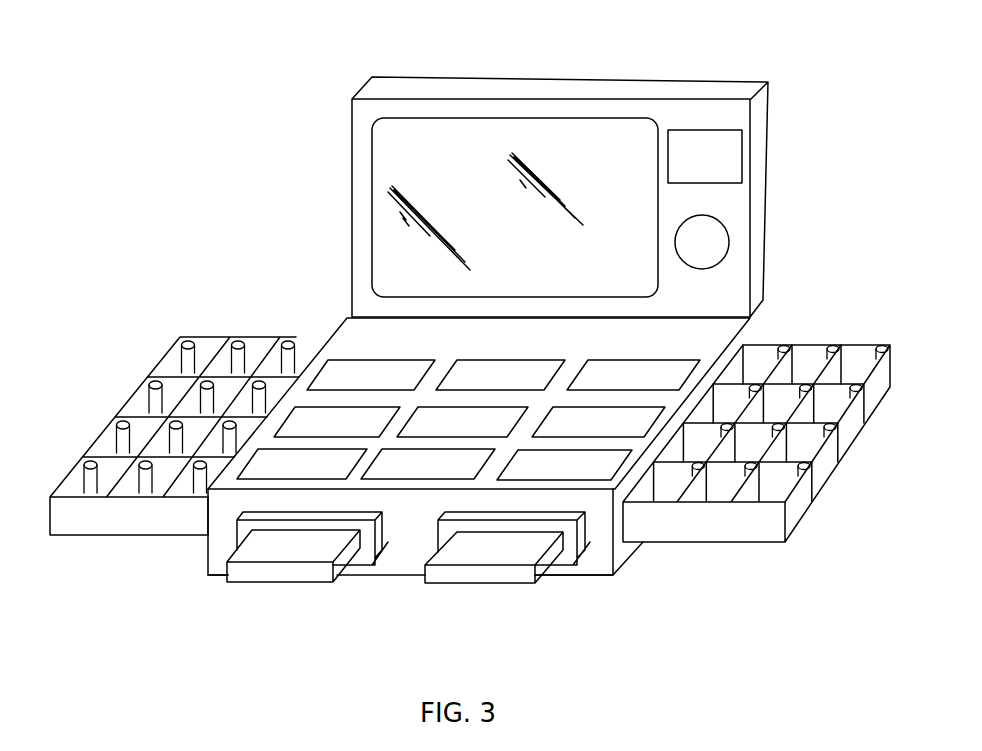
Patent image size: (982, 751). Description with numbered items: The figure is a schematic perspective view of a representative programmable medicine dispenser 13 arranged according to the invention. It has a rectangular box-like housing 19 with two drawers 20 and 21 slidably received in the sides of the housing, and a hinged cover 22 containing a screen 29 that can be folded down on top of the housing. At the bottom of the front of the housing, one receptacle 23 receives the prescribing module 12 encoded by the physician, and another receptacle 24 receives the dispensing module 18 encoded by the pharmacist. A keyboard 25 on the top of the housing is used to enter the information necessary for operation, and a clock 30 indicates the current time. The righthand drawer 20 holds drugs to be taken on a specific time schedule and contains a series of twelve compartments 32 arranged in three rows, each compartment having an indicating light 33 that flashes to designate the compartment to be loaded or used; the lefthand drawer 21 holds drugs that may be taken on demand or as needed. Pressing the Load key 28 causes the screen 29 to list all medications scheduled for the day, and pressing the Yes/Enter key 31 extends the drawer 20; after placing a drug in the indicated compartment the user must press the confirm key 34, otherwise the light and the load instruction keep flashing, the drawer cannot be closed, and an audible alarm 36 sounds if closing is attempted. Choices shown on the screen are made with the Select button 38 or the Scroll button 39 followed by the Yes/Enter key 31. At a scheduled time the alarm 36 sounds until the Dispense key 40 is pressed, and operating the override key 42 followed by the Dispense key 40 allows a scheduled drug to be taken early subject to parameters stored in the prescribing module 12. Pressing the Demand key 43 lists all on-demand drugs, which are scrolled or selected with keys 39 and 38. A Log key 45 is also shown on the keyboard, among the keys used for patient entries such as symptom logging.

The prescribing module 12 is at (490, 582).
The programmable medicine dispenser 13 is at (613, 580).
The dispensing module 18 is at (278, 576).
The housing 19 is at (217, 537).
The righthand drawer 20 is at (757, 434).
The lefthand drawer 21 is at (92, 528).
The hinged cover 22 is at (351, 123).
The receptacle 23 is at (590, 542).
The receptacle 24 is at (380, 552).
The keyboard 25 is at (345, 316).
The Load key 28 is at (628, 433).
The screen 29 is at (448, 132).
The clock 30 is at (735, 155).
The Yes/Enter key 31 is at (247, 480).
The compartments 32 is at (863, 352).
The indicating light 33 is at (804, 467).
The confirm key 34 is at (442, 472).
The audible alarm 36 is at (720, 238).
The Select button 38 is at (328, 362).
The Scroll button 39 is at (523, 363).
The Dispense key 40 is at (612, 462).
The override key 42 is at (453, 413).
The Demand key 43 is at (307, 410).
The log key 45 is at (646, 364).